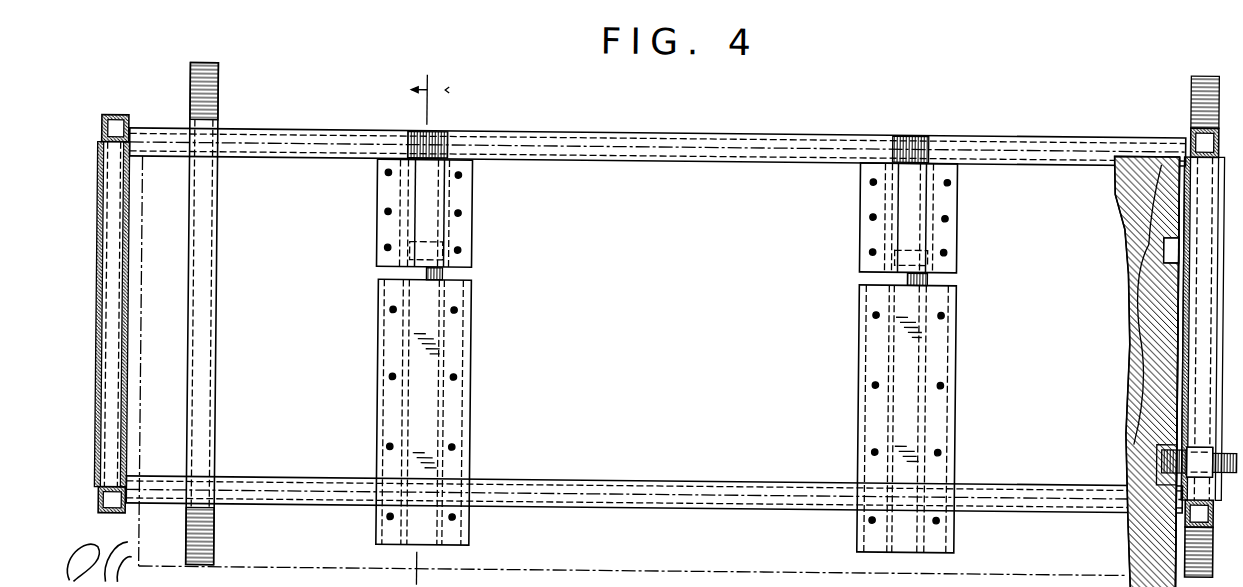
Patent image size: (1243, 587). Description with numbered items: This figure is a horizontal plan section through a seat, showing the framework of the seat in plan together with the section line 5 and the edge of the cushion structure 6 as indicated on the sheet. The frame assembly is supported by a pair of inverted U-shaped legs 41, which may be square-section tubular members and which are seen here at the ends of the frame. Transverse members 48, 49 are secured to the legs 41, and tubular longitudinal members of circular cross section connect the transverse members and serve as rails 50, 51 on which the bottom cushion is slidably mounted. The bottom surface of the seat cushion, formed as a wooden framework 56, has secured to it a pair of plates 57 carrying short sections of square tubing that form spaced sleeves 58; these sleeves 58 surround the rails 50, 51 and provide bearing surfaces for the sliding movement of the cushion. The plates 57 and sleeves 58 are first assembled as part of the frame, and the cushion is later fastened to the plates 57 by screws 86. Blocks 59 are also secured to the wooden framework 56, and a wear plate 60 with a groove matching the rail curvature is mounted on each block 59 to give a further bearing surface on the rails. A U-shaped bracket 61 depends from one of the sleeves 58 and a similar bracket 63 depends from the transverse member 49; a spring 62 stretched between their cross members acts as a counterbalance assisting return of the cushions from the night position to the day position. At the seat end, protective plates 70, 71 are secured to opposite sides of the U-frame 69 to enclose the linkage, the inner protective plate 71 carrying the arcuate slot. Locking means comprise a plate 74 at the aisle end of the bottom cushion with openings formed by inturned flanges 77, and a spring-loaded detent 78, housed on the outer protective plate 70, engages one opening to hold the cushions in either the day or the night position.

The section line 5- 5 is at (427, 318).
The panel 6 is at (1198, 382).
The inverted U-shaped legs 41 is at (216, 363).
The transverse member 48 is at (715, 509).
The transverse member 49 is at (652, 162).
The rail 50 is at (927, 278).
The rail 51 is at (445, 277).
The wooden framework 56 is at (1134, 363).
The plates 57 is at (471, 227).
The sleeves 58 is at (425, 201).
The blocks 59 is at (453, 352).
The wear plate 60 is at (462, 404).
The U-shaped bracket 61 is at (451, 258).
The spring 62 is at (409, 187).
The bracket 63 is at (442, 145).
The U-frame 69 is at (111, 247).
The outer protective plate 70 is at (97, 314).
The inner protective plate 71 is at (128, 340).
The plate 74 is at (1173, 293).
The inturned flanges 77 is at (1167, 238).
The detent 78 is at (1162, 457).
The screws 86 is at (385, 215).